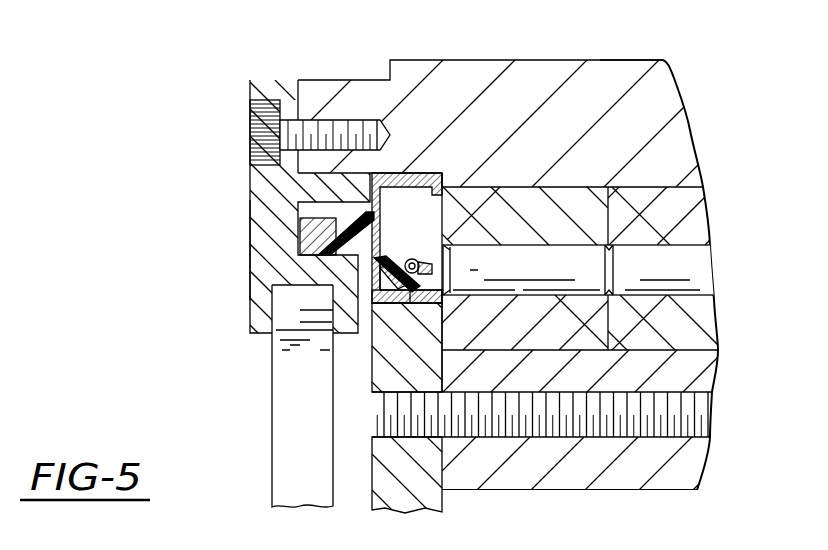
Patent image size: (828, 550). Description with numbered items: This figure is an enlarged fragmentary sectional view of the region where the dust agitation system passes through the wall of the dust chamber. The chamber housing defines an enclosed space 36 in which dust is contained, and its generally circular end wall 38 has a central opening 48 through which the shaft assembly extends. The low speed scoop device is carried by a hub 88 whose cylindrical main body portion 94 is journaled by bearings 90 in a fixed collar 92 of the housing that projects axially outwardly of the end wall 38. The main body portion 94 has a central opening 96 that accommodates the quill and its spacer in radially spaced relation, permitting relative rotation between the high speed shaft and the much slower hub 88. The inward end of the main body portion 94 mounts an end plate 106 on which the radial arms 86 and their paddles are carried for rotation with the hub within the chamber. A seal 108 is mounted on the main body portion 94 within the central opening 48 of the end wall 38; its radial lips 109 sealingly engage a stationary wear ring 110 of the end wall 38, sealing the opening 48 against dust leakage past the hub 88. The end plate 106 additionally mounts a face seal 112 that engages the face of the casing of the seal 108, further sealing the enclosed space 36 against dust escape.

The enclosed space 36 is at (172, 341).
The end wall 38 is at (400, 458).
The central opening 48 is at (419, 305).
The arms 86 is at (287, 422).
The hub 88 is at (417, 60).
The bearings 90 is at (567, 265).
The collar 92 is at (688, 470).
The main body portion 94 is at (675, 147).
The central opening 96 is at (644, 58).
The end plate 106 is at (258, 250).
The seal 108 is at (430, 166).
The radial lips 109 is at (418, 305).
The wear ring 110 is at (414, 266).
The face seal 112 is at (350, 208).